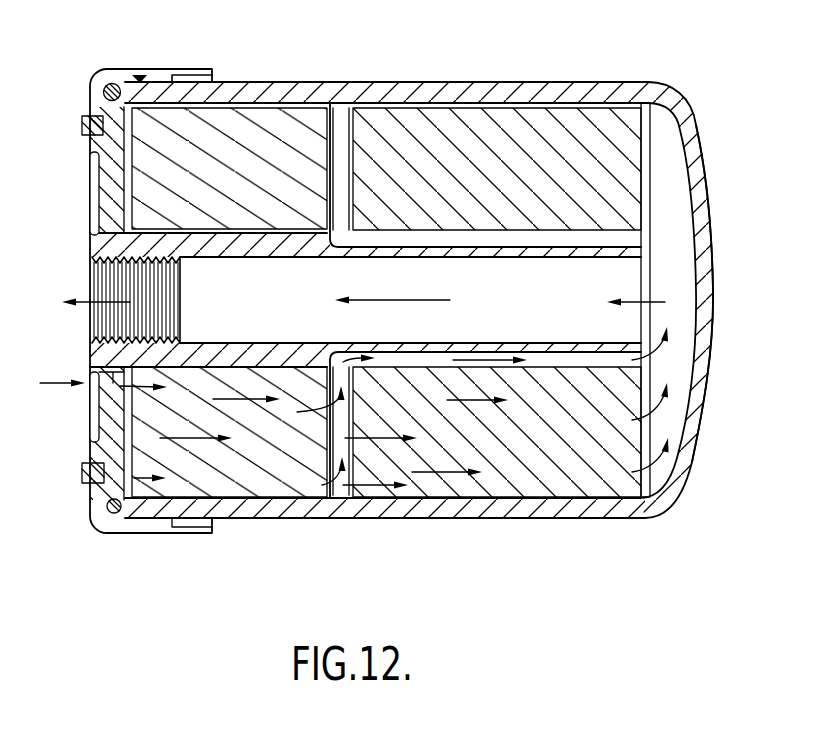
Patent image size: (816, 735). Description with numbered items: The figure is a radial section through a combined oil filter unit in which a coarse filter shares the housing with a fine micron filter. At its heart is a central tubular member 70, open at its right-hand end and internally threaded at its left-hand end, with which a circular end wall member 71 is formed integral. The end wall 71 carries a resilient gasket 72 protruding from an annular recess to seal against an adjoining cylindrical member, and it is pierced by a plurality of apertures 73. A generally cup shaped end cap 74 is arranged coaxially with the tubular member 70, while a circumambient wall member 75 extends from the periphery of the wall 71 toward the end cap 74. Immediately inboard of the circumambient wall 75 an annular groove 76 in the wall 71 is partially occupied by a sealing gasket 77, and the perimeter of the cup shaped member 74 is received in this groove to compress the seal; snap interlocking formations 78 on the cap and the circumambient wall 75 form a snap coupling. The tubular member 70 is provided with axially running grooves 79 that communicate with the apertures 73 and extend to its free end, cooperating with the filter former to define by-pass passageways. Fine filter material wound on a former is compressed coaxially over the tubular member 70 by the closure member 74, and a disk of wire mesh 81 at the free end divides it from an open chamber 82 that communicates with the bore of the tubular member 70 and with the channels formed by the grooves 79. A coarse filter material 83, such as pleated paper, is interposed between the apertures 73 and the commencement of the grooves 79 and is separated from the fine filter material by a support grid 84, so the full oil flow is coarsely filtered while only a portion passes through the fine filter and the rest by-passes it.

The central tubular member 70 is at (560, 258).
The circular end wall member 71 is at (106, 200).
The resilient gasket 72 is at (82, 120).
The apertures 73 is at (92, 388).
The end cap 74 is at (680, 128).
The circumambient wall member 75 is at (210, 69).
The annular groove 76 is at (110, 512).
The sealing gasket 77 is at (103, 86).
The snap interlocking formations 78 is at (141, 80).
The axially running grooves 79 is at (471, 357).
The wire mesh 81 is at (644, 213).
The open chamber 82 is at (677, 256).
The coarse filter material 83 is at (160, 440).
The support grid 84 is at (336, 482).